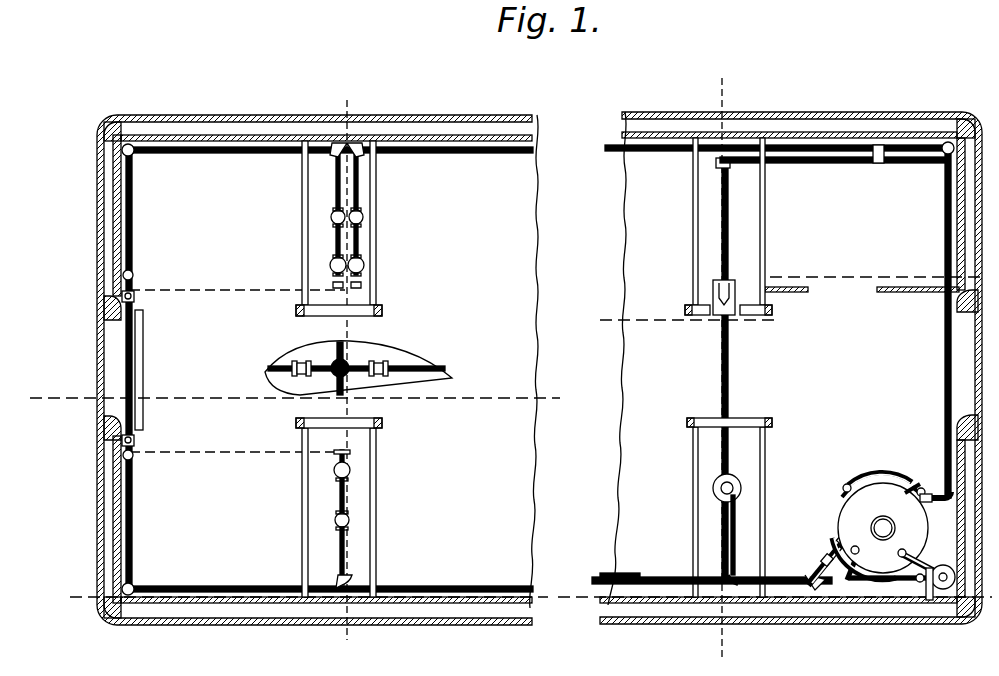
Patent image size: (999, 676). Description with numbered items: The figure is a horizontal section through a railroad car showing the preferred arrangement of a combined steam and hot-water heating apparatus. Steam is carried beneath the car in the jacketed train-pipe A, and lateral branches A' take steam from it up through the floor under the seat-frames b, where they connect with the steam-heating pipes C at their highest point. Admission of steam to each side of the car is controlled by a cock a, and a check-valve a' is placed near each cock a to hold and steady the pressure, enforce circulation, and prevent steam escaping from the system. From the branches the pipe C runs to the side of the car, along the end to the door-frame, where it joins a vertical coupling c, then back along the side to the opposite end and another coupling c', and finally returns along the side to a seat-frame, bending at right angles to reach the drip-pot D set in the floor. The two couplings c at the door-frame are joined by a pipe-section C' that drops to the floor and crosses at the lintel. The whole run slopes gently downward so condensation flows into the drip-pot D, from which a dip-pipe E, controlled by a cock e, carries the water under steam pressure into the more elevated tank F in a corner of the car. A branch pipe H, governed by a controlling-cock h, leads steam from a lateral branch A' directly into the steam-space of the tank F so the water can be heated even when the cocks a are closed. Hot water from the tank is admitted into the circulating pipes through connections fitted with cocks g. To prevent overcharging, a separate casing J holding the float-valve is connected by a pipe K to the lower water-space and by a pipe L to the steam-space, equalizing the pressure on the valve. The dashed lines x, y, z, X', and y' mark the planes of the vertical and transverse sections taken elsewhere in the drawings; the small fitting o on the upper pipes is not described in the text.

The train-pipe A is at (358, 357).
The lateral branch A' is at (351, 372).
The steam-heating pipe C is at (327, 369).
The pipe-section C' is at (544, 361).
The vertical pipe-coupling c is at (138, 368).
The pipe-coupling c' is at (712, 608).
The branch pipe H is at (446, 154).
The seat-frame b is at (302, 243).
The cock a is at (336, 365).
The check-valve a' is at (358, 368).
The controlling-cock h is at (362, 284).
The pipe fitting o is at (884, 160).
The drip-pot D is at (742, 486).
The dip-pipe E is at (736, 525).
The tank F is at (882, 525).
The cock g is at (815, 553).
The cock e is at (864, 555).
The pipe L is at (918, 558).
The box or casing J is at (950, 577).
The pipe K is at (892, 582).
The section line x' x' X' is at (347, 371).
The section line y' y' is at (719, 370).
The section line y y is at (789, 300).
The section line z z is at (295, 389).
The section line x x is at (532, 597).